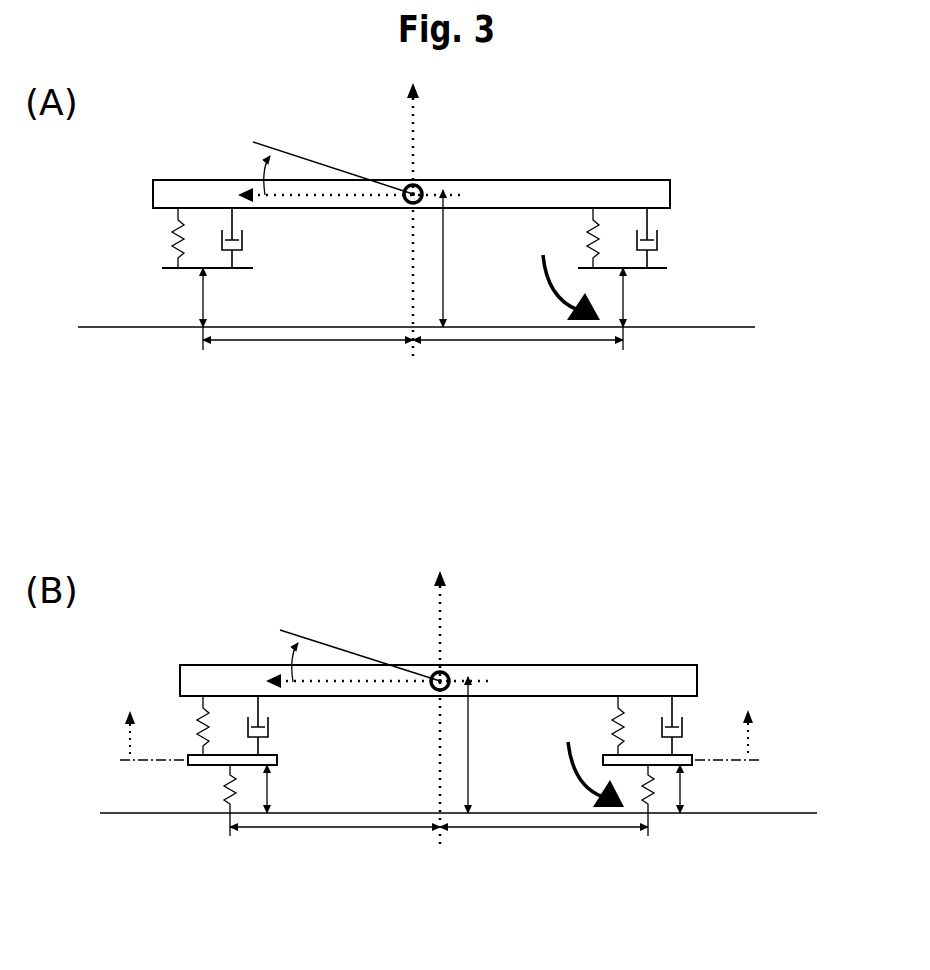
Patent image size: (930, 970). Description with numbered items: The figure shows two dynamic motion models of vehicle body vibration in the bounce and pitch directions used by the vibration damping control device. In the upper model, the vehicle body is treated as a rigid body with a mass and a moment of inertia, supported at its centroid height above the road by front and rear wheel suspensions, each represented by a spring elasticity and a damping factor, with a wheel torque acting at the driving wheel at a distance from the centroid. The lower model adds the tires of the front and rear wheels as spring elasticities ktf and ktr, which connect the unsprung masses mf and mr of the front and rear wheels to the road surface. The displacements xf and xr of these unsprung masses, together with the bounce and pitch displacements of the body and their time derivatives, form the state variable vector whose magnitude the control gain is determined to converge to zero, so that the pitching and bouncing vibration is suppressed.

The unsprung mass of front wheel mf is at (195, 762).
The unsprung mass of rear wheel mr is at (692, 761).
The elastic modulus of front wheel tire ktf is at (211, 789).
The elastic modulus of rear wheel tire ktr is at (674, 810).
The displacement of front wheel unsprung mass xf is at (141, 735).
The displacement of rear wheel unsprung mass xr is at (738, 735).